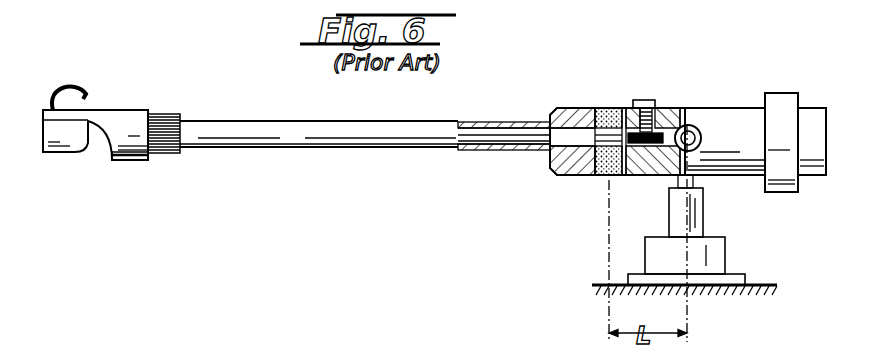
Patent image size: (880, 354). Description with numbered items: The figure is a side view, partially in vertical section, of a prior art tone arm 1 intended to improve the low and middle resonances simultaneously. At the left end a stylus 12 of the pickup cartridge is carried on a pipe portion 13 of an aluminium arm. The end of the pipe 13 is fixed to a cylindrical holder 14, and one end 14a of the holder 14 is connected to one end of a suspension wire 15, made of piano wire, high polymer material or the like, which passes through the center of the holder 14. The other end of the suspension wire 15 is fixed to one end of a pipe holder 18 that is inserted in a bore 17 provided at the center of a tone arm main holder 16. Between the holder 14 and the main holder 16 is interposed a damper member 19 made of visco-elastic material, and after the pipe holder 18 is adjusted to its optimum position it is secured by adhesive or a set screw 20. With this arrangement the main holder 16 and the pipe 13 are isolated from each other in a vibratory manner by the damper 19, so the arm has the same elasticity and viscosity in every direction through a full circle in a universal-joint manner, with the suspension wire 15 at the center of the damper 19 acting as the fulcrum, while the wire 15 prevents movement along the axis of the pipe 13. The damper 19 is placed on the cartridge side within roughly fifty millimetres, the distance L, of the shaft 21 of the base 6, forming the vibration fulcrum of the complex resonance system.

The prior art tool 1 is at (190, 102).
The stylus 12 is at (58, 153).
The pipe portion 13 is at (275, 121).
The cylindrical holder 14 is at (550, 172).
The end of the holder 14a is at (548, 124).
The suspension wire 15 is at (598, 177).
The tone arm main holder 16 is at (739, 177).
The bore 17 is at (684, 112).
The pipe holder 18 is at (638, 177).
The damper member 19 is at (607, 108).
The set screw 20 is at (648, 100).
The shaft 21 is at (696, 190).
The base 6 is at (650, 255).